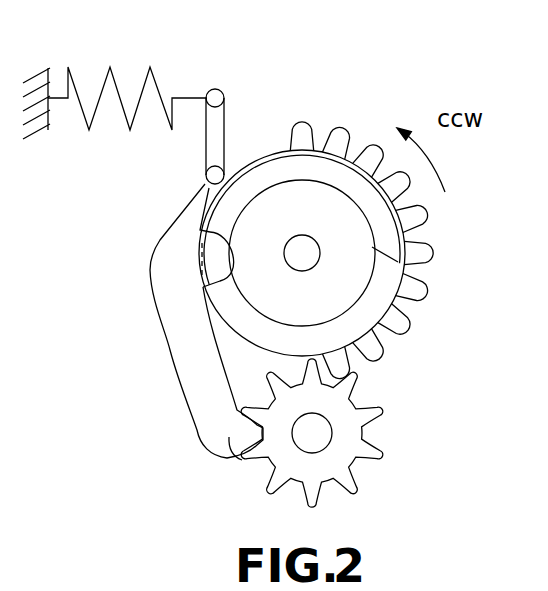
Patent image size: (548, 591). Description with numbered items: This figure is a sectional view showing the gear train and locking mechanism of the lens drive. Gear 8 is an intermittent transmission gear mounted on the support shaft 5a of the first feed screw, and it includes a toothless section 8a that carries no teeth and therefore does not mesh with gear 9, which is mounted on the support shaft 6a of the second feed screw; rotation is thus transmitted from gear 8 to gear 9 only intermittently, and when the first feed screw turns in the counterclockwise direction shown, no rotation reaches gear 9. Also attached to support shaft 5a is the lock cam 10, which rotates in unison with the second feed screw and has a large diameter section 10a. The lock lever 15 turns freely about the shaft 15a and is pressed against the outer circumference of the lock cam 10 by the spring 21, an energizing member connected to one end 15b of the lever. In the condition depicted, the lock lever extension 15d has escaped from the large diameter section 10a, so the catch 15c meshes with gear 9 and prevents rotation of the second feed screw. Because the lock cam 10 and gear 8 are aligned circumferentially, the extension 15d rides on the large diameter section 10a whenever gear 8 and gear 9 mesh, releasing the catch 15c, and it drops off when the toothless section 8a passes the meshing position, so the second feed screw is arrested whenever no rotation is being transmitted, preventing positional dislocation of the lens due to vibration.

The spring 21 is at (110, 67).
The one end of lever 15b is at (215, 90).
The shaft 15a is at (207, 173).
The toothless section 8a is at (262, 152).
The gear 8 is at (343, 133).
The lock cam 10 is at (350, 228).
The large diameter section 10a is at (355, 318).
The support shaft 5a is at (312, 258).
The lock lever 15 is at (193, 336).
The lock lever extension 15d is at (218, 267).
The catch 15c is at (240, 457).
The gear 9 is at (350, 481).
The support shaft 6a is at (318, 433).